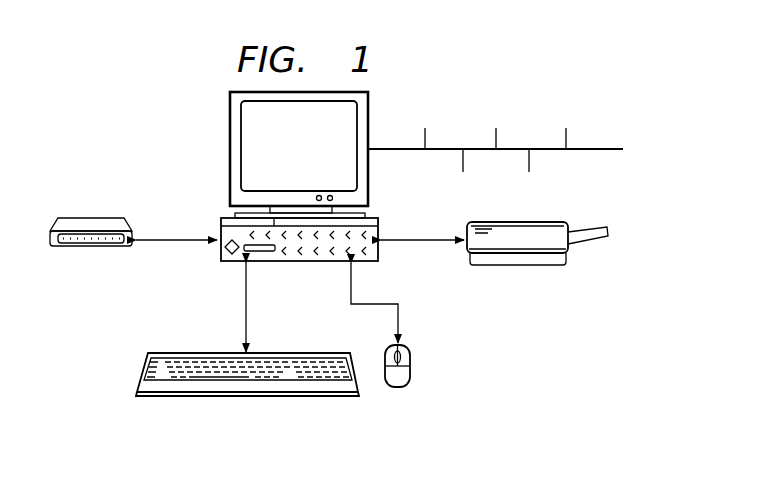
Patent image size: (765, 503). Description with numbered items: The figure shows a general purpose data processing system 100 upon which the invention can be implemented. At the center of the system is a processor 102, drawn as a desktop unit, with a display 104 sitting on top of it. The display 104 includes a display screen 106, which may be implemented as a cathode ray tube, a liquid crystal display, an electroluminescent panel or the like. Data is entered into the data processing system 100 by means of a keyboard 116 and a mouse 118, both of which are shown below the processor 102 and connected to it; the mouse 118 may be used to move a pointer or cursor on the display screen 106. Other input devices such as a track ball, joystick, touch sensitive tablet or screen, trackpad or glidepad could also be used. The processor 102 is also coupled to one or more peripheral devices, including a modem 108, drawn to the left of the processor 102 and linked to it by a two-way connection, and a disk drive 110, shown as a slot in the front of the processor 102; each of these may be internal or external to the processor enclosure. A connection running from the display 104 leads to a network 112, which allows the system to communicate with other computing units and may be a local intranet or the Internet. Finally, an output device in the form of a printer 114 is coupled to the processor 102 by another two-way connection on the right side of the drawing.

The data processing system 100 is at (122, 116).
The processor 102 is at (221, 228).
The display 104 is at (230, 126).
The display screen 106 is at (241, 160).
The modem 108 is at (92, 218).
The disk drive 110 is at (270, 253).
The network 112 is at (546, 123).
The printer 114 is at (522, 266).
The keyboard 116 is at (162, 395).
The mouse 118 is at (397, 389).